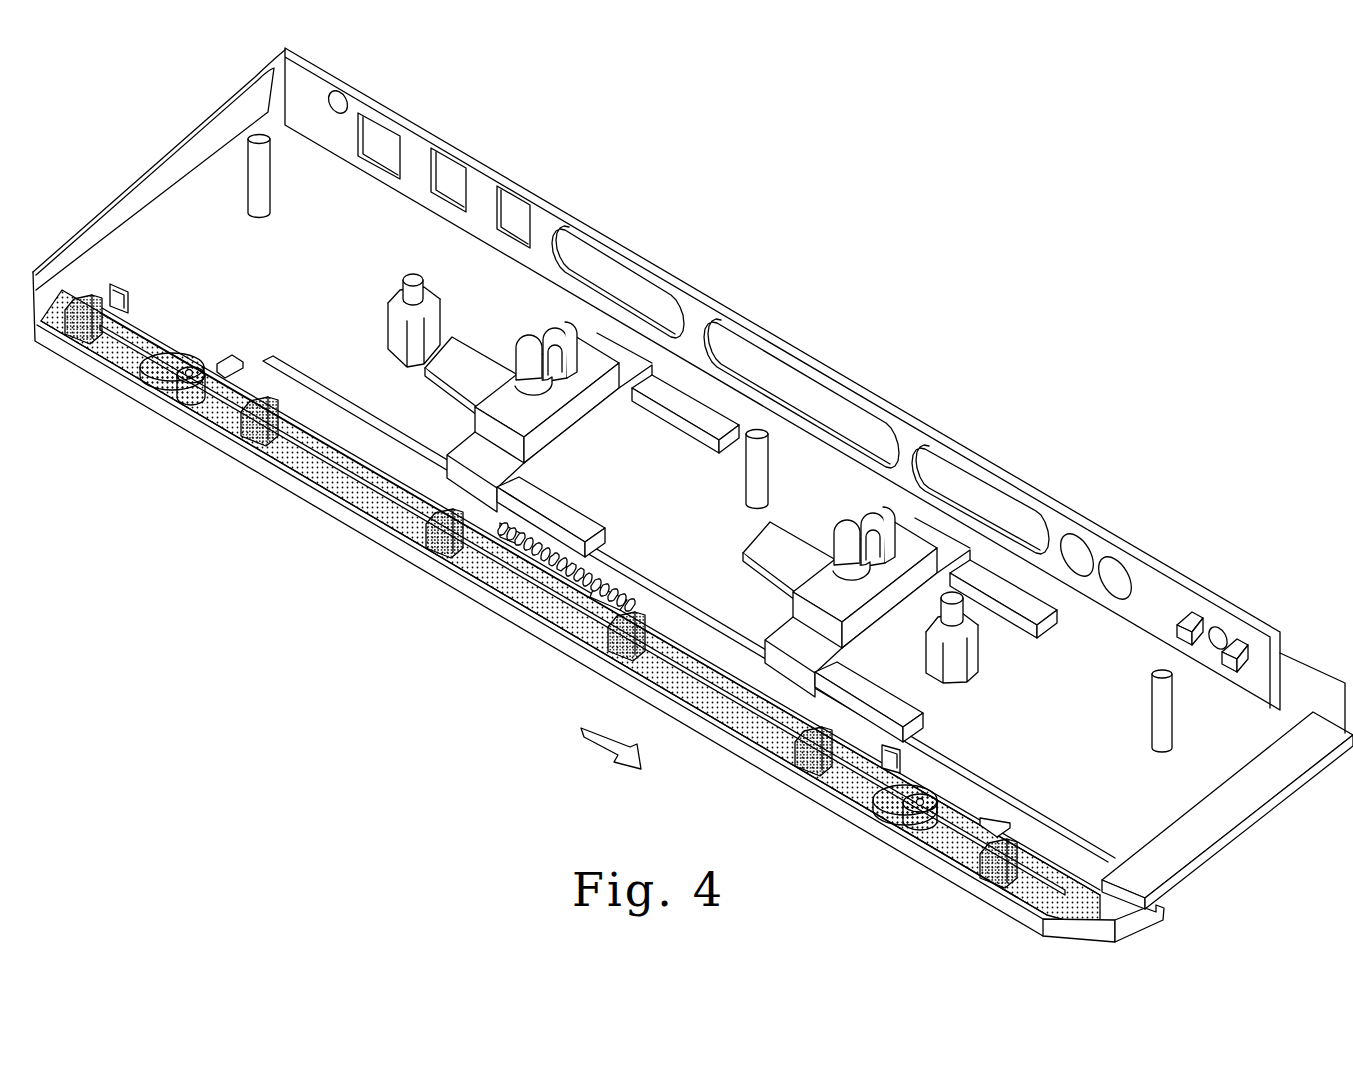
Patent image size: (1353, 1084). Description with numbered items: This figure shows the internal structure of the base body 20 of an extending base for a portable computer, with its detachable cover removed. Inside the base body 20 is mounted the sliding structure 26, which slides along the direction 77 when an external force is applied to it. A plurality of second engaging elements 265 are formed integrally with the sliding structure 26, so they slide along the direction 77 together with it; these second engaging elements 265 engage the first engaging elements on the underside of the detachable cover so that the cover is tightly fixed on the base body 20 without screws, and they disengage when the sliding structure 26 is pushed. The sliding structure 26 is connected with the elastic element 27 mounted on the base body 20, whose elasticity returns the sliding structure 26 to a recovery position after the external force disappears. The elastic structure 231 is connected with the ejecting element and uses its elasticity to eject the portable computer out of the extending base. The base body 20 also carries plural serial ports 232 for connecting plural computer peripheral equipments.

The base body 20 is at (150, 400).
The sliding structure 26 is at (339, 466).
The elastic element 27 is at (543, 580).
The direction 77 is at (632, 760).
The elastic structure 231 is at (597, 363).
The serial ports 232 is at (805, 400).
The second engaging elements 265 is at (452, 552).